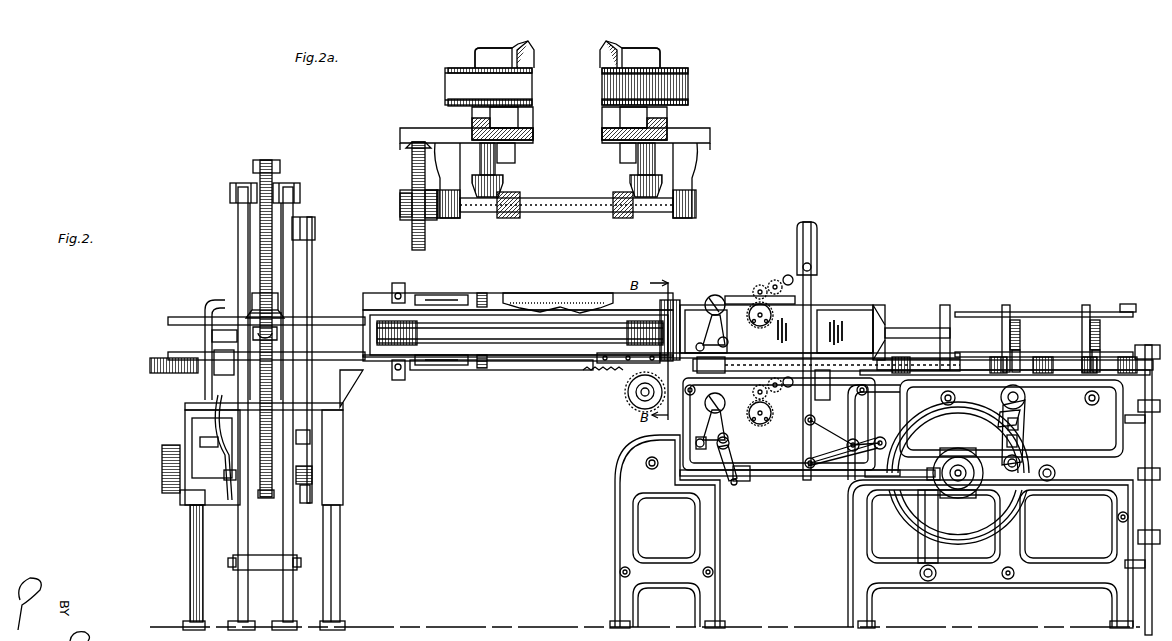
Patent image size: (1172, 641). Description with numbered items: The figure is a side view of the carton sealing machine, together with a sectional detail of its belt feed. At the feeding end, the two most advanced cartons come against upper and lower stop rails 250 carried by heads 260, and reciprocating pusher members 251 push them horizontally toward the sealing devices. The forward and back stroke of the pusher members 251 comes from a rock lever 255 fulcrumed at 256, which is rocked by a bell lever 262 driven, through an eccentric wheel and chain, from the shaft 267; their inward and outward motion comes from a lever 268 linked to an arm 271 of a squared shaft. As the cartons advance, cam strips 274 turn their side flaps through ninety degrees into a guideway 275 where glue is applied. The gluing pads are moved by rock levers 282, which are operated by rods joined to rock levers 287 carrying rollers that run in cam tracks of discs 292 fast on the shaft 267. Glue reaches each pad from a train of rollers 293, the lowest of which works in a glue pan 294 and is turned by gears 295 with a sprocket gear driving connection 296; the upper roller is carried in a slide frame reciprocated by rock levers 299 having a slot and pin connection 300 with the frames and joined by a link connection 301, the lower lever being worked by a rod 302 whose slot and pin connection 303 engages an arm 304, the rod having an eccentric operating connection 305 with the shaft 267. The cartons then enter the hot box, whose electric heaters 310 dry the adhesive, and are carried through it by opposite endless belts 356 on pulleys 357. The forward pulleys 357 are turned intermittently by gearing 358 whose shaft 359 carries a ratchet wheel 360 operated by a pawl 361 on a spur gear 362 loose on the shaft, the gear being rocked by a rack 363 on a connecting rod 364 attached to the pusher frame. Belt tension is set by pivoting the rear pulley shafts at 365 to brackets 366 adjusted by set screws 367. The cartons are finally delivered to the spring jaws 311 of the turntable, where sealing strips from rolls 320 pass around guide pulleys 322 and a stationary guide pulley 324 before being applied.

In FIG. 2, the stop rails 250 is at (977, 313).
In FIG. 2, the pusher members 251 is at (1083, 327).
In FIG. 2, the rock lever 255 is at (1035, 401).
In FIG. 2, the fulcrum 256 is at (1012, 472).
In FIG. 2, the heads 260 is at (1083, 312).
In FIG. 2, the bell lever 262 is at (1004, 413).
In FIG. 2, the shaft 267 is at (935, 480).
In FIG. 2, the lever 268 is at (1150, 520).
In FIG. 2, the arm 271 is at (1127, 403).
In FIG. 2, the cam strips 274 is at (922, 328).
In FIG. 2, the guideway 275 is at (880, 305).
In FIG. 2, the rock levers 282 is at (837, 423).
In FIG. 2, the rock levers 287 is at (918, 537).
In FIG. 2, the discs 292 is at (952, 530).
In FIG. 2, the rollers 293 is at (775, 280).
In FIG. 2, the glue pan 294 is at (728, 296).
In FIG. 2, the gears 295 is at (760, 427).
In FIG. 2, the sprocket gear driving connection 296 is at (772, 328).
In FIG. 2, the rock levers 299 is at (713, 317).
In FIG. 2, the slot and pin connection 300 is at (716, 296).
In FIG. 2, the link connection 301 is at (703, 376).
In FIG. 2, the rod 302 is at (772, 478).
In FIG. 2, the slot and pin connection 303 is at (725, 478).
In FIG. 2, the arm 304 is at (733, 462).
In FIG. 2, the eccentric operating connection 305 is at (962, 488).
In FIG. 2, the electric heaters 310 is at (538, 293).
In FIG. 2, the spring jaws 311 is at (180, 317).
In FIG. 2, the rolls 320 is at (272, 163).
In FIG. 2, the guide pulleys 322 is at (280, 165).
In FIG. 2, the stationary guide pulley 324 is at (278, 300).
In FIG. 2A, the endless belts 356 is at (602, 82).
In FIG. 2, the endless belts 356 is at (462, 381).
In FIG. 2A, the pulleys 357 is at (448, 103).
In FIG. 2, the pulleys 357 is at (418, 330).
In FIG. 2A, the gearing 358 is at (630, 186).
In FIG. 2A, the shaft 359 is at (556, 212).
In FIG. 2A, the ratchet wheel 360 is at (432, 218).
In FIG. 2A, the pawl 361 is at (412, 150).
In FIG. 2A, the spur gear 362 is at (404, 191).
In FIG. 2, the spur gear 362 is at (630, 385).
In FIG. 2, the rack 363 is at (588, 372).
In FIG. 2, the connecting rod 364 is at (838, 372).
In FIG. 2, the pivot 365 is at (405, 292).
In FIG. 2, the brackets 366 is at (460, 295).
In FIG. 2, the set screws 367 is at (484, 293).